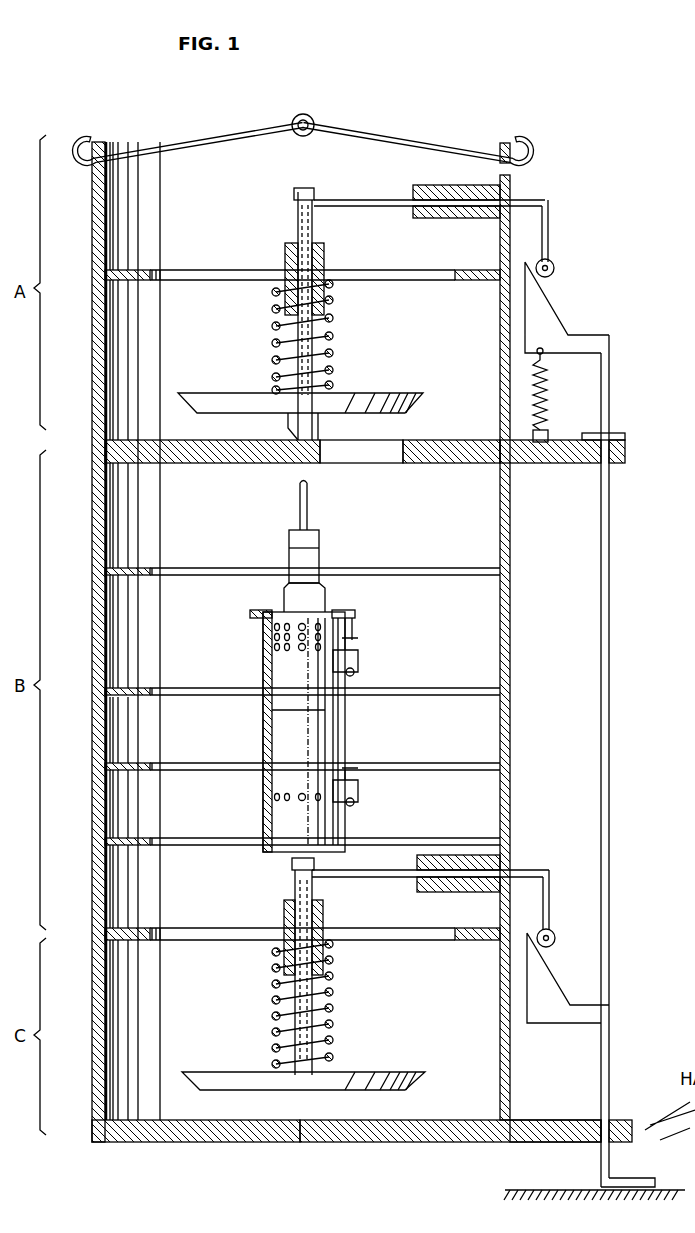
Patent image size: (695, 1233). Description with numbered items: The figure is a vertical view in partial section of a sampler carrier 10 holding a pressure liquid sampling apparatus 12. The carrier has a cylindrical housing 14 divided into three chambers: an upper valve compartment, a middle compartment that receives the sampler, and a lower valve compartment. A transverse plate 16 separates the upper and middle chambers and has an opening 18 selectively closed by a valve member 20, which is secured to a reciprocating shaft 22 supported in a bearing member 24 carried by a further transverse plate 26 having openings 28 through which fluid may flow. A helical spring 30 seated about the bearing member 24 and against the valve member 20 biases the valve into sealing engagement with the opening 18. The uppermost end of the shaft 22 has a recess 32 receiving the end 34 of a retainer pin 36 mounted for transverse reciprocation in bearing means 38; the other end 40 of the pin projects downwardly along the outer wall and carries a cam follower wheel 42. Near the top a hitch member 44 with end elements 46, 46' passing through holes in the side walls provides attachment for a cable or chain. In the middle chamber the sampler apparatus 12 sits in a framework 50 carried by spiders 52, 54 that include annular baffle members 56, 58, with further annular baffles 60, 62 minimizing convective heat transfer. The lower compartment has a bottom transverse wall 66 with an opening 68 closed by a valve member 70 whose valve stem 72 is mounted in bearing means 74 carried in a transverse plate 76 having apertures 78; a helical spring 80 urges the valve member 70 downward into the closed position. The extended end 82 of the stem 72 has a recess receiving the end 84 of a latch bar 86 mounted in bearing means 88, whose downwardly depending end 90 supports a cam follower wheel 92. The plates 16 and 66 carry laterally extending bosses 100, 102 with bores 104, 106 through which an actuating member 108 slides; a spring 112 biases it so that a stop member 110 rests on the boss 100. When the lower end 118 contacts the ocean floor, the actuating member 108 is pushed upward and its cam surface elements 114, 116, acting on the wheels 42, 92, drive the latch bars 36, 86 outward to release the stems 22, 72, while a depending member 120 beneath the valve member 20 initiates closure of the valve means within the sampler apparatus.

The sampler carrier 10 is at (94, 445).
The pressure liquid sampling apparatus 12 is at (284, 558).
The cylindrical housing 14 is at (96, 632).
The transverse plate 16 is at (162, 463).
The opening 18 is at (402, 448).
The valve member 20 is at (384, 393).
The reciprocating shaft 22 is at (298, 228).
The bearing member 24 is at (285, 252).
The transverse plate 26 is at (130, 272).
The openings 28 is at (204, 276).
The helical spring 30 is at (336, 354).
The recess 32 is at (300, 190).
The end of retainer pin 34 is at (306, 204).
The retainer pin 36 is at (360, 200).
The bearing means 38 is at (428, 188).
The other end of retainer pin 40 is at (550, 213).
The cam follower wheel 42 is at (556, 267).
The hitch member 44 is at (340, 134).
The end element 46 is at (73, 165).
The end element 46' is at (532, 150).
The framework 50 is at (345, 726).
The spider 52 is at (206, 690).
The spider 54 is at (235, 770).
The annular baffle member 56 is at (126, 690).
The annular baffle member 58 is at (126, 765).
The annular baffle 60 is at (135, 575).
The annular baffle 62 is at (148, 840).
The bottom transverse wall 66 is at (158, 1140).
The opening 68 is at (288, 1140).
The valve member 70 is at (250, 1085).
The valve stem 72 is at (306, 1027).
The bearing means 74 is at (324, 916).
The transverse plate 76 is at (106, 975).
The apertures 78 is at (214, 940).
The helical spring 80 is at (336, 996).
The extended end of valve stem 82 is at (292, 866).
The end of latch bar 84 is at (314, 878).
The latch bar means 86 is at (532, 870).
The bearing means 88 is at (446, 842).
The downwardly depending end 90 is at (551, 896).
The cam follower wheel 92 is at (556, 942).
The laterally extending boss 100 is at (550, 465).
The laterally extending boss 102 is at (576, 1120).
The bore 104 is at (614, 458).
The bore 106 is at (606, 1128).
The actuating member 108 is at (612, 586).
The stop member 110 is at (612, 437).
The spring 112 is at (548, 386).
The cam surface element 114 is at (548, 316).
The cam surface element 116 is at (552, 1023).
The lower end of actuating member 118 is at (644, 1168).
The depending member 120 is at (314, 428).